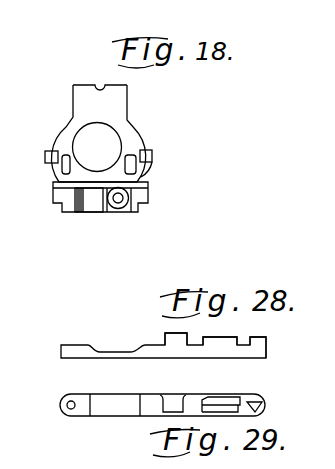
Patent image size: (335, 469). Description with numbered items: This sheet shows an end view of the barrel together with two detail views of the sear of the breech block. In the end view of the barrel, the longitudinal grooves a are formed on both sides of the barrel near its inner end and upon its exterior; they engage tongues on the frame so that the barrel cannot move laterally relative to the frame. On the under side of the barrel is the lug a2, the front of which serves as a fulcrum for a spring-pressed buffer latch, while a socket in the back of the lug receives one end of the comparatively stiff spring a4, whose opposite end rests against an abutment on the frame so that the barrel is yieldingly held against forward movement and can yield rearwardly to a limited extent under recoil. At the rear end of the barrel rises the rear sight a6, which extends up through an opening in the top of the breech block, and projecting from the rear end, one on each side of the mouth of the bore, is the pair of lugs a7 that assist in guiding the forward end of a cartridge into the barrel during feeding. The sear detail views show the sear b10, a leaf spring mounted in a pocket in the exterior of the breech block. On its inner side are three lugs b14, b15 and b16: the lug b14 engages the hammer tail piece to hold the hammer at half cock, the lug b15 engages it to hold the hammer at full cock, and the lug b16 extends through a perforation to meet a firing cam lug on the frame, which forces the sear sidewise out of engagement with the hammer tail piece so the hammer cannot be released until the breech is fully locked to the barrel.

In FIG. 18, the longitudinal grooves a is at (62, 175).
In FIG. 18, the lug a2 is at (106, 212).
In FIG. 18, the spring a4 is at (139, 210).
In FIG. 18, the rear sight a6 is at (97, 86).
In FIG. 18, the lugs a7 is at (150, 128).
In FIG. 28, the sear b10 is at (73, 345).
In FIG. 29, the sear b10 is at (67, 395).
In FIG. 28, the lug b14 is at (261, 340).
In FIG. 29, the lug b14 is at (265, 404).
In FIG. 28, the lug b15 is at (225, 342).
In FIG. 29, the lug b15 is at (222, 405).
In FIG. 28, the lug b16 is at (178, 340).
In FIG. 29, the lug b16 is at (170, 415).